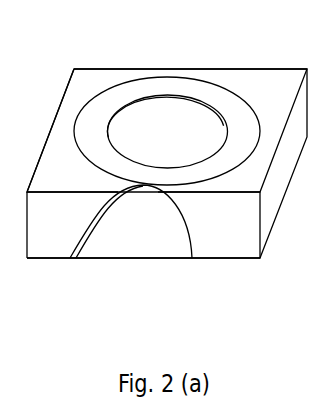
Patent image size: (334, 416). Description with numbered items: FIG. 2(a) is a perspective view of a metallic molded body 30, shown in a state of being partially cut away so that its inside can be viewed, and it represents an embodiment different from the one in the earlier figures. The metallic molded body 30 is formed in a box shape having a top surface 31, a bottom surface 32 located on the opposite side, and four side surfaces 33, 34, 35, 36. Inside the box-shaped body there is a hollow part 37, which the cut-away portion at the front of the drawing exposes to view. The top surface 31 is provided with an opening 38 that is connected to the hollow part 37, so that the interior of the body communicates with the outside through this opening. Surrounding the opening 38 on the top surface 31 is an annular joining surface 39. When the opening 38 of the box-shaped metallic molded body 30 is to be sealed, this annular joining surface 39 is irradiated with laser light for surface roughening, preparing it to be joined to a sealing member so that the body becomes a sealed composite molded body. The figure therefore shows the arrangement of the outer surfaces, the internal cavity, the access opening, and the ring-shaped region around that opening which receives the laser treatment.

The metallic molded body 30 is at (190, 63).
The top surface 31 is at (92, 80).
The bottom surface 32 is at (100, 260).
The side surface 33 is at (210, 248).
The side surface 34 is at (270, 208).
The side surface 35 is at (255, 70).
The side surface 36 is at (52, 121).
The hollow part 37 is at (147, 240).
The opening 38 is at (160, 103).
The annular joining surface 39 is at (239, 117).